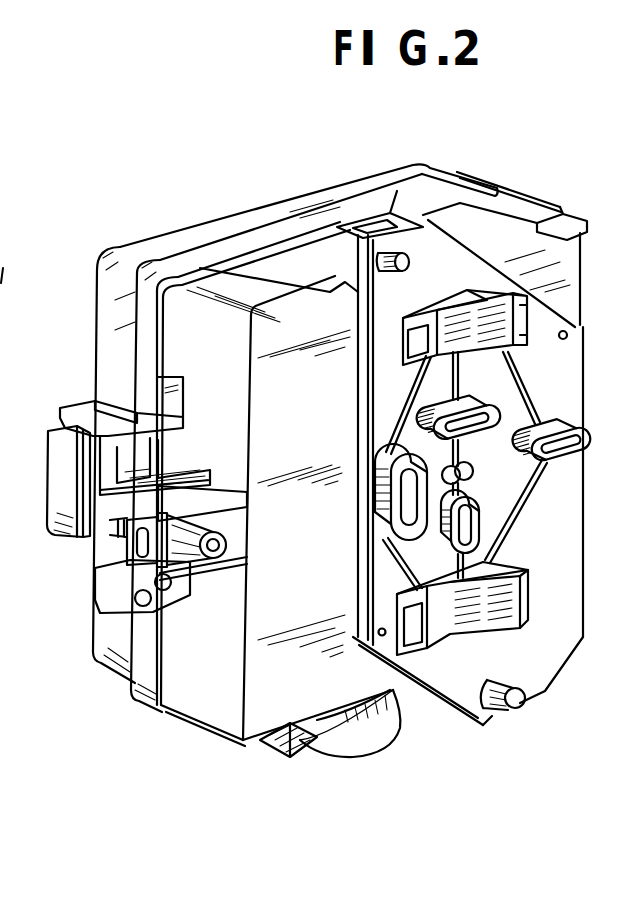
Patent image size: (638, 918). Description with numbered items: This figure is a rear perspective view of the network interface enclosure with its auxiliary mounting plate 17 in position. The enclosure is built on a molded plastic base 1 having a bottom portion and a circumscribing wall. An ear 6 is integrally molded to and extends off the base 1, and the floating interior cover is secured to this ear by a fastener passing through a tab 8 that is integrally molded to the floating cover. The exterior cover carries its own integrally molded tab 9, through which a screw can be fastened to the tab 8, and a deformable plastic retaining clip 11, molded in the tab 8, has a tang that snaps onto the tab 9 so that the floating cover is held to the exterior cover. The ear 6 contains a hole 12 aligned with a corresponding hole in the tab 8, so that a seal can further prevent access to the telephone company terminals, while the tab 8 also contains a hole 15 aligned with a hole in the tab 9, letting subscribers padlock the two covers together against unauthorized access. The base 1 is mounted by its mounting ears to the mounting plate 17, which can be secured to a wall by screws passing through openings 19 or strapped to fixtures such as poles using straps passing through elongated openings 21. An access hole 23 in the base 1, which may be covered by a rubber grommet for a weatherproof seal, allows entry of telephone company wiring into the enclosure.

The base 1 is at (232, 705).
The ear 6 is at (212, 493).
The tab 8 is at (178, 474).
The tab 9 is at (67, 470).
The retaining clip 11 is at (85, 406).
The hole 12 is at (140, 544).
The hole 15 is at (140, 600).
The mounting plate 17 is at (560, 647).
The openings 19 is at (433, 420).
The elongated openings 21 is at (396, 350).
The access hole 23 is at (353, 758).